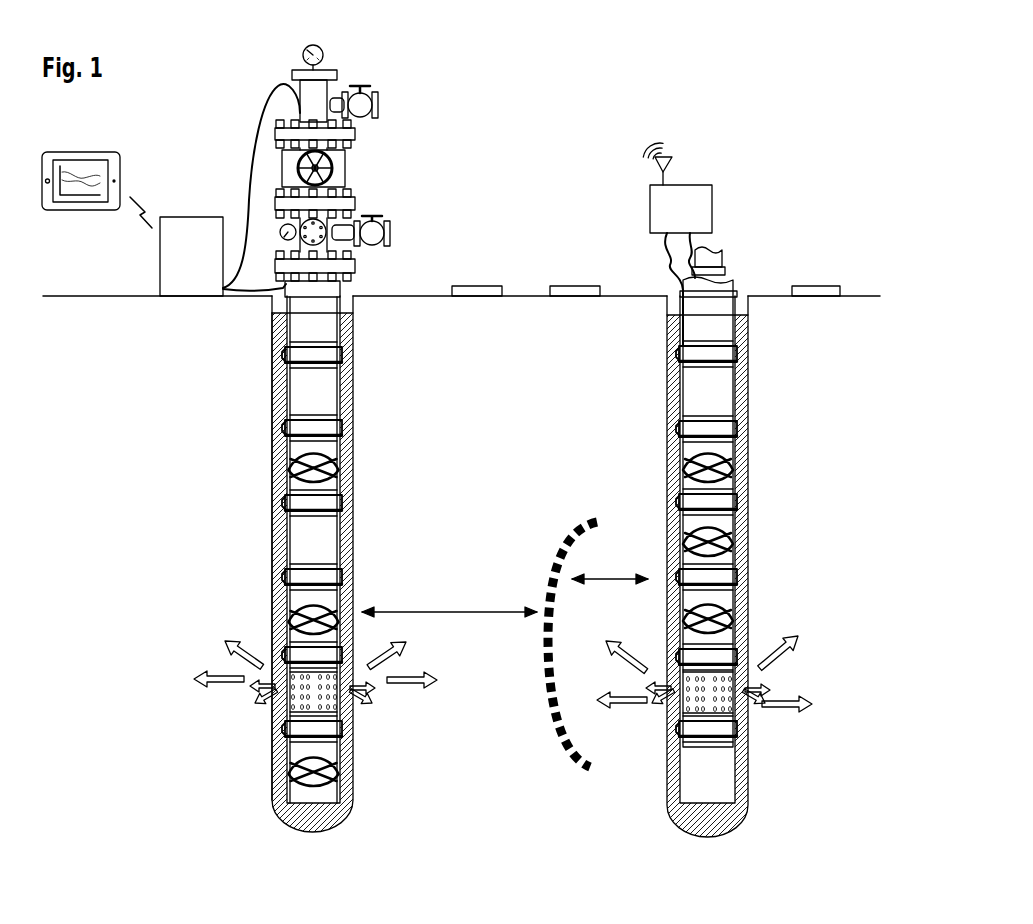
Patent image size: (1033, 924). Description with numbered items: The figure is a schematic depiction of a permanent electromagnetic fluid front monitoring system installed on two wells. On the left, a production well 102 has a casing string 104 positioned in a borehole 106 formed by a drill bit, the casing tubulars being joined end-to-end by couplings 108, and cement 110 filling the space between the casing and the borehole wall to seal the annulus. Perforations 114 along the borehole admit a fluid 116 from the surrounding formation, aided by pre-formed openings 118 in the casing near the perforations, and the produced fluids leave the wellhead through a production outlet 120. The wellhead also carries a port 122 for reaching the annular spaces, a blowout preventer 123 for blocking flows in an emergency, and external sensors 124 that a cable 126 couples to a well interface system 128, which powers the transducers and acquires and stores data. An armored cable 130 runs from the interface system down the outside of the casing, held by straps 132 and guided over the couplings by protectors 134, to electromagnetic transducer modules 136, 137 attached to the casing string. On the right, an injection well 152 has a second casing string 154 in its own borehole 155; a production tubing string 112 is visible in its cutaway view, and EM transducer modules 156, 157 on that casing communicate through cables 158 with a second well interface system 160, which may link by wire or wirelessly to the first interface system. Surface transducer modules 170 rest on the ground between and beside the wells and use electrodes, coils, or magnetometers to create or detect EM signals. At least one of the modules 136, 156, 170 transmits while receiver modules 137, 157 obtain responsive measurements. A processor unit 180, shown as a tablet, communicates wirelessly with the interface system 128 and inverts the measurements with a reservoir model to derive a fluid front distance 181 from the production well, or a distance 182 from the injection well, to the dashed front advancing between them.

The well 102 is at (385, 25).
The casing string 104 is at (352, 330).
The borehole 106 is at (270, 297).
The couplings 108 is at (337, 428).
The cement 110 is at (280, 385).
The production tubing string 112 is at (719, 253).
The perforations 114 is at (340, 687).
The fluid 116 is at (315, 671).
The pre-formed openings 118 is at (338, 708).
The production outlet 120 is at (363, 91).
The port 122 is at (373, 217).
The blowout preventer 123 is at (347, 172).
The external sensors 124 is at (304, 51).
The cable 126 is at (257, 110).
The well interface system 128 is at (160, 262).
The armored cable 130 is at (280, 286).
The straps 132 is at (350, 300).
The protectors 134 is at (283, 355).
The electromagnetic transducer module 136 is at (288, 460).
The electromagnetic transducer modules 137 is at (290, 607).
The injection well 152 is at (741, 120).
The second casing string 154 is at (735, 322).
The borehole 155 is at (666, 299).
The EM transducer module 156 is at (683, 458).
The EM transducer modules 157 is at (748, 590).
The cables 158 is at (690, 257).
The second well interface system 160 is at (657, 234).
The surface transducer modules 170 is at (560, 286).
The processor unit 180 is at (75, 207).
The fluid front distance 181 is at (449, 601).
The fluid front distance 182 is at (598, 644).